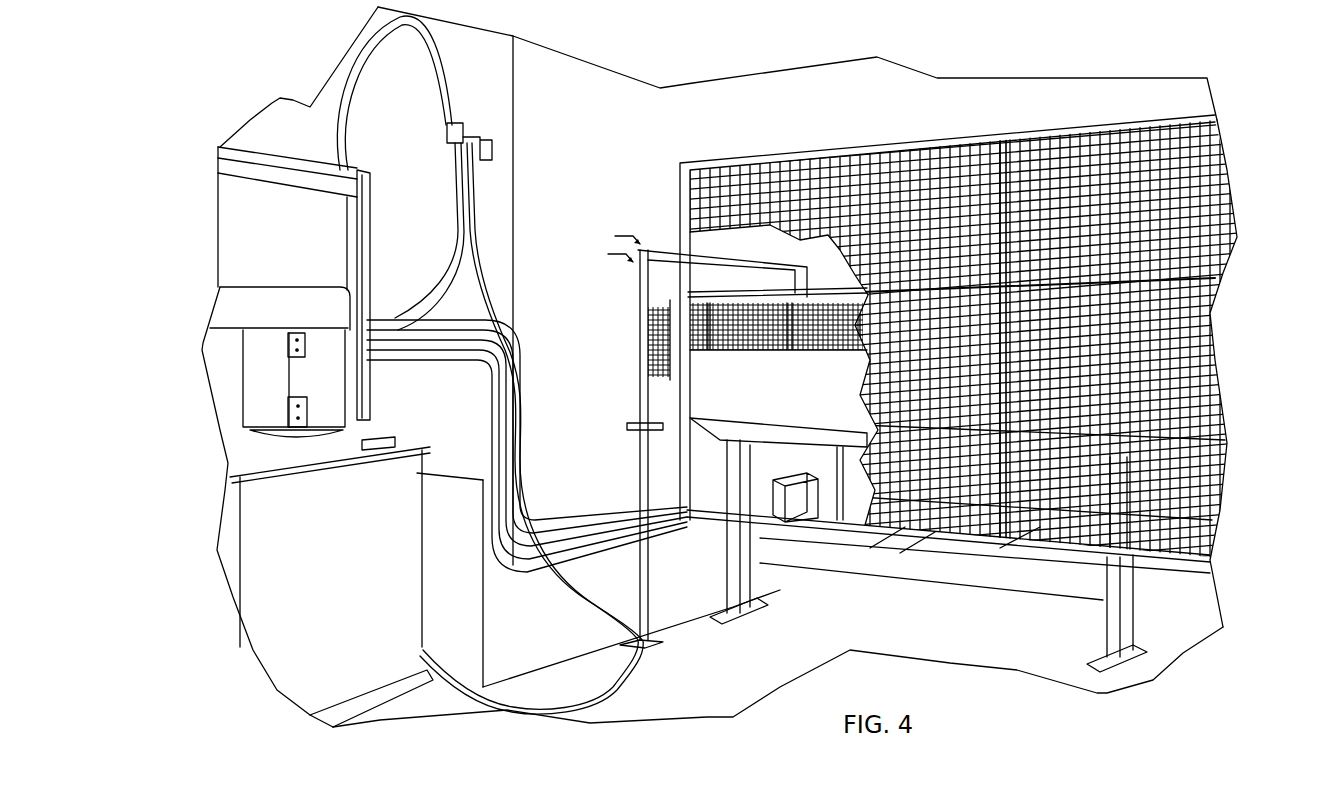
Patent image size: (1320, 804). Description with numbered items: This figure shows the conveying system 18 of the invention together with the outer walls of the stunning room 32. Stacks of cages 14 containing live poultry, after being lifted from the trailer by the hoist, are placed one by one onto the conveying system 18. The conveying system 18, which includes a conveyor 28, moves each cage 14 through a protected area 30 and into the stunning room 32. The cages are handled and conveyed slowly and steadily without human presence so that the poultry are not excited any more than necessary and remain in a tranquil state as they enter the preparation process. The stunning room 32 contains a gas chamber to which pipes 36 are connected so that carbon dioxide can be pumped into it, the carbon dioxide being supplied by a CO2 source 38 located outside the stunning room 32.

The cages 14 is at (648, 335).
The conveying system 18 is at (1172, 612).
The conveyor 28 is at (737, 437).
The protected area 30 is at (1237, 180).
The stunning room 32 is at (557, 88).
The pipes 36 is at (462, 167).
The CO2 source 38 is at (263, 390).